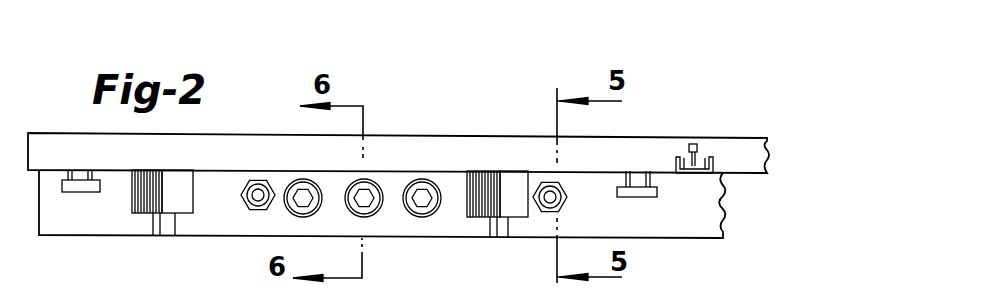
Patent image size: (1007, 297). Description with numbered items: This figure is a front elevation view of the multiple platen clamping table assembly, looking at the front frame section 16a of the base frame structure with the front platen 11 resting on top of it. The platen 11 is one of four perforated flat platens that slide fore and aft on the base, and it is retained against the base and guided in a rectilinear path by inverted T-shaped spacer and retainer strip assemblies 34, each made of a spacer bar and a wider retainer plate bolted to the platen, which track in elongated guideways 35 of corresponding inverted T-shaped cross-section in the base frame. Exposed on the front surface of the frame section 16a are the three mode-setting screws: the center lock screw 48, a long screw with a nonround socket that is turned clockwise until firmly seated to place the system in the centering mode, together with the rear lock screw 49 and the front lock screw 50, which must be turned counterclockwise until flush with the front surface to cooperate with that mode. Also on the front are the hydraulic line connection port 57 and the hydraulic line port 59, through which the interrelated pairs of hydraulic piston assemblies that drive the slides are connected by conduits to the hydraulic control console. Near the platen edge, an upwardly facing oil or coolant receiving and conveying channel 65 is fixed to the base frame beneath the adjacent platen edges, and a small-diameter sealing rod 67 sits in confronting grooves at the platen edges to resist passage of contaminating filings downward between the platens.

The front platen 11 is at (441, 136).
The front frame section 16a is at (213, 226).
The spacer and retainer strip assembly 34 is at (84, 178).
The guideway 35 is at (76, 193).
The hydraulic line port 59 is at (240, 198).
The rear lock screw 49 is at (312, 180).
The center lock screw 48 is at (381, 204).
The front lock screw 50 is at (439, 204).
The hydraulic line connection port 57 is at (568, 195).
The oil receiving channel 65 is at (715, 167).
The sealing rod 67 is at (695, 143).